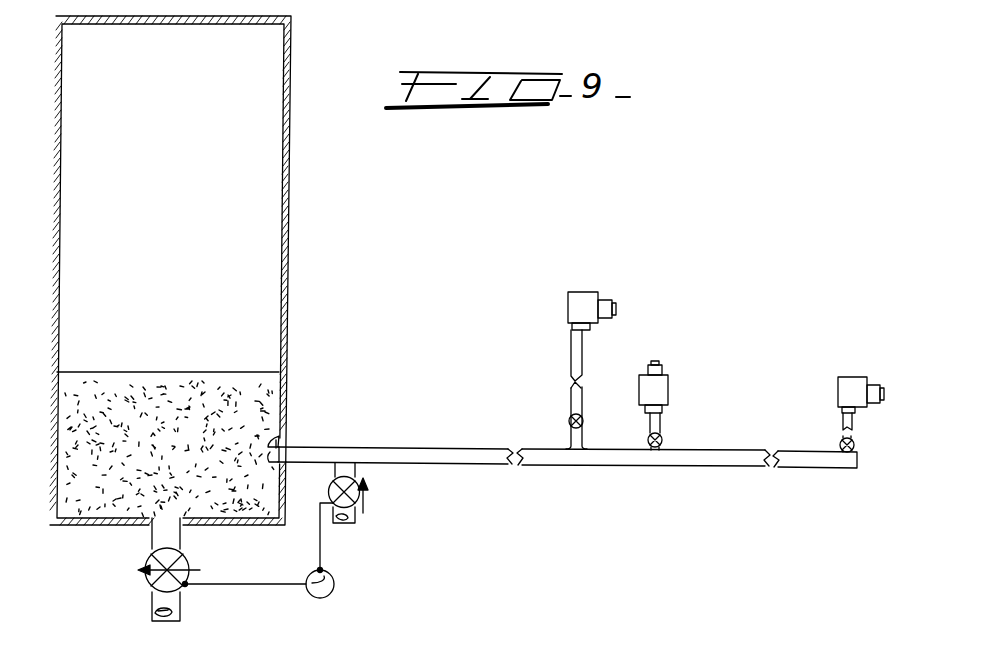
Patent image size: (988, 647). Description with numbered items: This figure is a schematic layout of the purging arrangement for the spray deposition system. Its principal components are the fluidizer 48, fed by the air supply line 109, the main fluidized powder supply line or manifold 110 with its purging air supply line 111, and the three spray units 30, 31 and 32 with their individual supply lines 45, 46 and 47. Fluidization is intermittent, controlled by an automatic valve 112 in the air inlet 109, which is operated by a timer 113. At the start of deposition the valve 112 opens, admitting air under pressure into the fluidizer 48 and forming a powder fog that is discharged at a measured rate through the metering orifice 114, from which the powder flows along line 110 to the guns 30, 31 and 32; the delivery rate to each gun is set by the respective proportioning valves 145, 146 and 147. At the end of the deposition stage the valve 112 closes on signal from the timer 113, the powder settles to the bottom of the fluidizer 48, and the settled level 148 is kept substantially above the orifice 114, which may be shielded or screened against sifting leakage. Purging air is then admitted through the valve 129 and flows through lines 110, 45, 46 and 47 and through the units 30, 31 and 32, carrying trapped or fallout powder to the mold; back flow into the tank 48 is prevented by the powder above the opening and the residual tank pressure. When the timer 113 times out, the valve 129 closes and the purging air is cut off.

The fluidizer 48 is at (256, 531).
The settled level 148 is at (205, 372).
The air supply line 109 is at (173, 533).
The automatic valve 112 is at (148, 564).
The timer 113 is at (325, 585).
The metering orifice 114 is at (278, 440).
The main fluidized powder supply line 110 is at (476, 462).
The purging air supply line 111 is at (340, 470).
The valve 129 is at (362, 495).
The individual supply line 47 is at (575, 348).
The spray unit 32 is at (588, 305).
The proportioning valve 147 is at (572, 418).
The spray unit 31 is at (657, 392).
The individual supply line 46 is at (650, 418).
The proportioning valve 146 is at (662, 440).
The spray unit 30 is at (850, 392).
The individual supply line 45 is at (855, 420).
The proportioning valve 145 is at (857, 444).